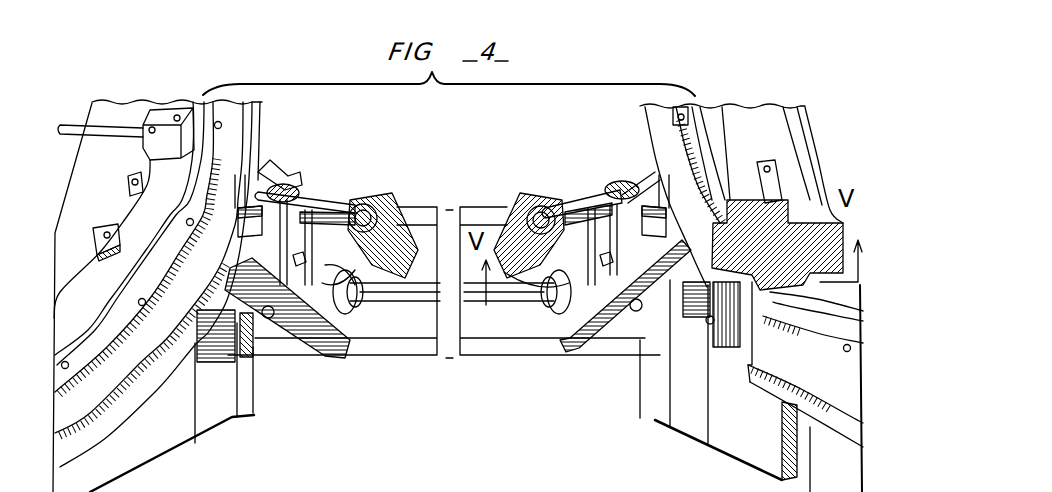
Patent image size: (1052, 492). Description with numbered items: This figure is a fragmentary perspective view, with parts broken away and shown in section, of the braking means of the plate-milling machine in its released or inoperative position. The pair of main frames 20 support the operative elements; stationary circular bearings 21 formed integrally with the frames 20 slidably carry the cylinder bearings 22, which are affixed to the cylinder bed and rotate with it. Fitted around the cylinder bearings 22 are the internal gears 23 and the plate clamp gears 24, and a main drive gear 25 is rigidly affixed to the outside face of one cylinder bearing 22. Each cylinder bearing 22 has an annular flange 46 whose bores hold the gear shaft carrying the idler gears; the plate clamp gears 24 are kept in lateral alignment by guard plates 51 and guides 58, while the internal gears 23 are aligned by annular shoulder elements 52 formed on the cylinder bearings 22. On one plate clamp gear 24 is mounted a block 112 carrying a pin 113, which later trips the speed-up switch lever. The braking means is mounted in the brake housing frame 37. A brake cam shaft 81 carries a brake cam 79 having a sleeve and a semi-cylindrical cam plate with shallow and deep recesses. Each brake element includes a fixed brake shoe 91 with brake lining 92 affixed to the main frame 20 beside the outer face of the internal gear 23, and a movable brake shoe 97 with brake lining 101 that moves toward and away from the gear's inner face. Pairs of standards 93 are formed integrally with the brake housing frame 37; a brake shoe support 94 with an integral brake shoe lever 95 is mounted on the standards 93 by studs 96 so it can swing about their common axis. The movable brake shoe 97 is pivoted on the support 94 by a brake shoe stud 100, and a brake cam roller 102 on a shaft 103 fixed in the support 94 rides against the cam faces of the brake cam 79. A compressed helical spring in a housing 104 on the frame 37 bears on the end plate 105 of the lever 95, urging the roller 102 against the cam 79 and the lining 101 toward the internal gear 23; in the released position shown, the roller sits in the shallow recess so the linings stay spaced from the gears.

The main frame 20 is at (165, 452).
The stationary circular bearing 21 is at (753, 305).
The cylinder bearing 22 is at (833, 170).
The internal gear 23 is at (108, 425).
The plate clamp gear 24 is at (163, 177).
The main drive gear 25 is at (829, 322).
The brake housing frame 37 is at (420, 358).
The annular flange 46 is at (742, 285).
The guard plate 51 is at (130, 330).
The annular shoulder element 52 is at (643, 400).
The guide 58 is at (128, 200).
The brake cam 79 is at (362, 308).
The brake cam shaft 81 is at (420, 303).
The fixed brake shoe 91 is at (190, 350).
The brake lining 92 is at (702, 290).
The standard 93 is at (300, 186).
The brake shoe support 94 is at (325, 350).
The brake shoe lever 95 is at (338, 205).
The stud 96 is at (262, 330).
The movable brake shoe 97 is at (265, 175).
The brake shoe stud 100 is at (258, 235).
The brake lining 101 is at (663, 412).
The brake cam roller 102 is at (372, 281).
The shaft 103 is at (305, 255).
The housing 104 is at (400, 230).
The end plate 105 is at (368, 208).
The block 112 is at (168, 110).
The pin 113 is at (85, 124).